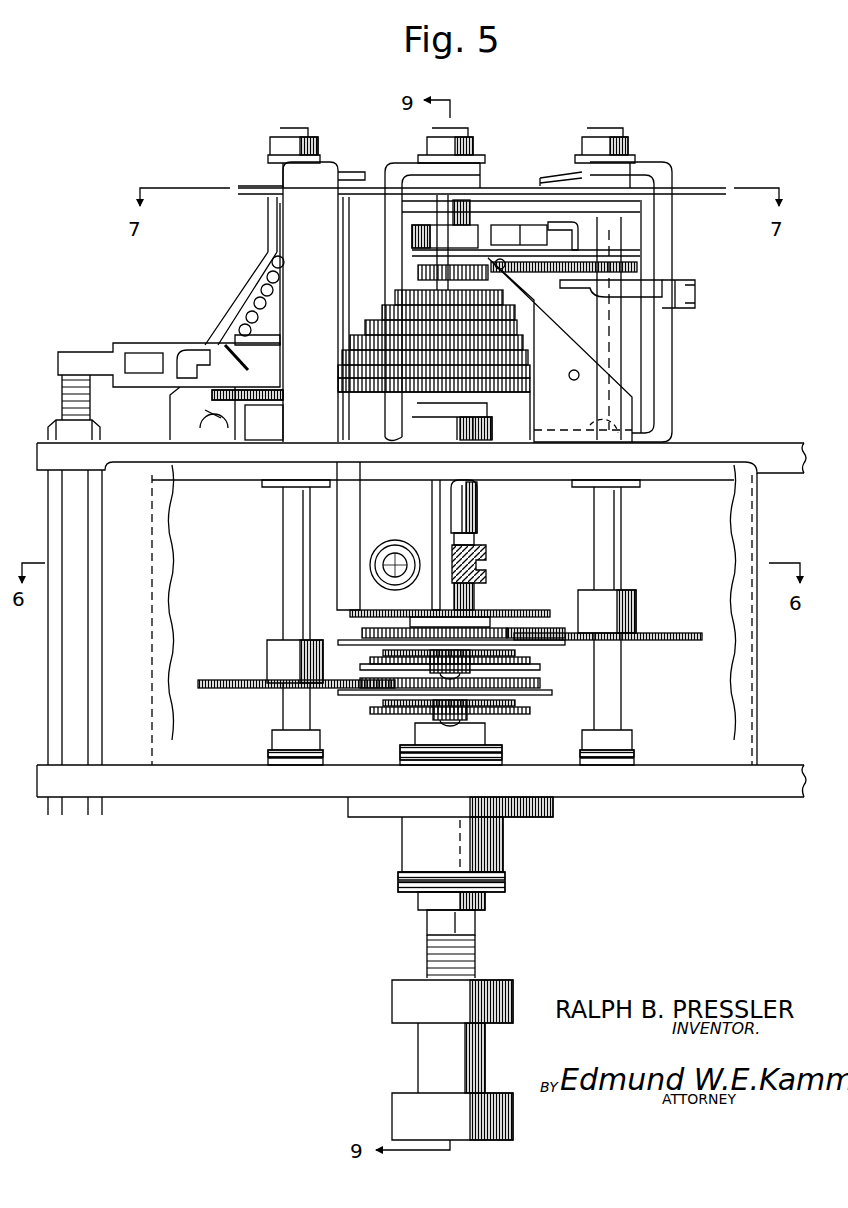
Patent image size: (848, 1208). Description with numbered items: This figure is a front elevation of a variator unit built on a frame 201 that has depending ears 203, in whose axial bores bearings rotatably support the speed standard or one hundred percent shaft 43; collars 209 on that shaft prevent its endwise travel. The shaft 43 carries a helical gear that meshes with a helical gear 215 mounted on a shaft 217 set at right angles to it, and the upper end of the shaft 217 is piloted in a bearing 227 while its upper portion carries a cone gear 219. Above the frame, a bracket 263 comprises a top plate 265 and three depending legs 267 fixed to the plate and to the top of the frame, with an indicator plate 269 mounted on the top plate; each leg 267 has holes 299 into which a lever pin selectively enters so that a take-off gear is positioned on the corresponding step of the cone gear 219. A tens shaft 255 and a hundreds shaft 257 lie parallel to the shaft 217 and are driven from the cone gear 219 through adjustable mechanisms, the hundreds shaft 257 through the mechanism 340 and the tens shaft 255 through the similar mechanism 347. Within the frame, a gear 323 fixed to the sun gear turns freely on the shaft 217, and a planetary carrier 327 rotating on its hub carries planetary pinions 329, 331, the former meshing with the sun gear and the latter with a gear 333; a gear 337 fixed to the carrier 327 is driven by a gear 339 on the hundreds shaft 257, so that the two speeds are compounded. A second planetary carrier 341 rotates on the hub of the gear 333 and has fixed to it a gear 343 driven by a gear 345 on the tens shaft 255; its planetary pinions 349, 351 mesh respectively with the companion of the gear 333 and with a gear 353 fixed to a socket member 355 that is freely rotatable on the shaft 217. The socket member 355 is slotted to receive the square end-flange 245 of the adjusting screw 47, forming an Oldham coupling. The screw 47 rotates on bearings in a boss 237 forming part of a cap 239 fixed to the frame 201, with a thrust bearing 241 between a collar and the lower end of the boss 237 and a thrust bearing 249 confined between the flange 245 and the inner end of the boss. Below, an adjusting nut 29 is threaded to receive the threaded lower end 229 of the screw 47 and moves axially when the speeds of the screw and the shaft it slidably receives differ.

The frame 201 is at (683, 445).
The depending ears 203 is at (406, 511).
The collars 209 is at (400, 542).
The helical gear 215 is at (486, 560).
The shaft 217 is at (412, 220).
The cone gear 219 is at (372, 325).
The bearing 227 is at (445, 236).
The threaded lower end 229 is at (475, 951).
The boss 237 is at (497, 853).
The cap 239 is at (550, 814).
The thrust bearing 241 is at (503, 885).
The square end-flange 245 is at (488, 740).
The thrust bearing 249 is at (503, 757).
The tens shaft 255 is at (290, 543).
The hundreds shaft 257 is at (612, 524).
The bracket 263 is at (268, 208).
The top plate 265 is at (340, 200).
The depending legs 267 is at (550, 407).
The indicator plate 269 is at (500, 192).
The holes 299 is at (568, 368).
The gear 323 is at (510, 610).
The planetary carrier 327 is at (380, 654).
The planetary pinions 329 is at (380, 660).
The planetary pinions 331 is at (480, 669).
The gear 333 is at (520, 658).
The gear 337 is at (365, 632).
The gear 339 is at (662, 638).
The adjustable mechanism 340 is at (660, 278).
The planetary carrier 341 is at (552, 695).
The gear 343 is at (540, 688).
The gear 345 is at (225, 680).
The mechanism 347 is at (228, 352).
The planetary pinions 349 is at (385, 702).
The planetary pinions 351 is at (435, 722).
The gear 353 is at (380, 712).
The socket member 355 is at (425, 740).
The speed standard shaft 43 is at (395, 580).
The adjusting screw 47 is at (475, 926).
The adjusting nut 29 is at (400, 1002).